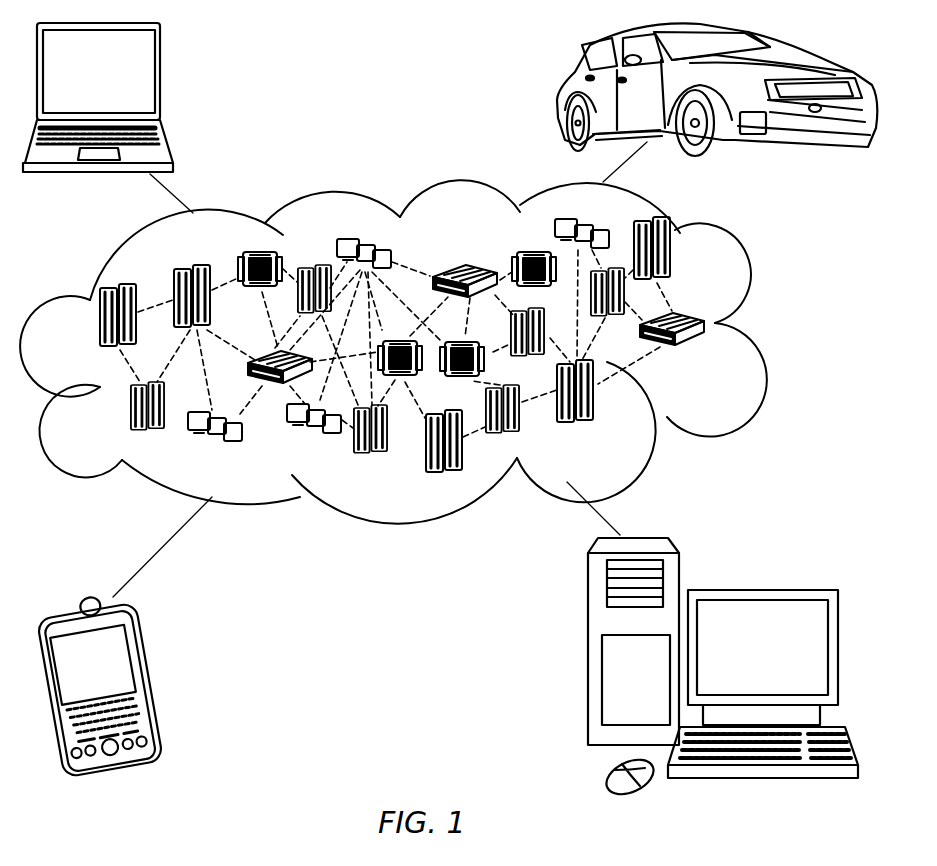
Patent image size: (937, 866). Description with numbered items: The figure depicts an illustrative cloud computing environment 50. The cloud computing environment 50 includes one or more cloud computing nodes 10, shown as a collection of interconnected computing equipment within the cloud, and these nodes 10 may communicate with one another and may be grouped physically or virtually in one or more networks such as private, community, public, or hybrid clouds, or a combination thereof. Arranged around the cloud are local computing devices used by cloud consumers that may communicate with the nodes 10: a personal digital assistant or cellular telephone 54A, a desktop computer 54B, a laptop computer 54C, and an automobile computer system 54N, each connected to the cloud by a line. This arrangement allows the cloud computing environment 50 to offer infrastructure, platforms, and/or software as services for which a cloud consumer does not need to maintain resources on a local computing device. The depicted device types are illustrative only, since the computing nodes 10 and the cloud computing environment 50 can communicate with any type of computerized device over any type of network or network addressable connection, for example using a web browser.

The cloud computing nodes 10 is at (712, 356).
The cloud computing environment 50 is at (760, 333).
The personal digital assistant (PDA) or cellular telephone 54A is at (152, 673).
The desktop computer 54B is at (760, 590).
The laptop computer 54C is at (163, 80).
The automobile computer system 54N is at (560, 93).